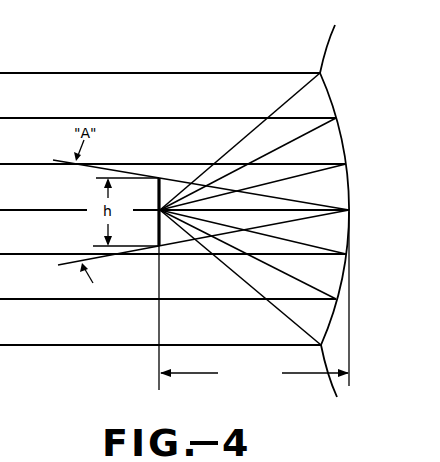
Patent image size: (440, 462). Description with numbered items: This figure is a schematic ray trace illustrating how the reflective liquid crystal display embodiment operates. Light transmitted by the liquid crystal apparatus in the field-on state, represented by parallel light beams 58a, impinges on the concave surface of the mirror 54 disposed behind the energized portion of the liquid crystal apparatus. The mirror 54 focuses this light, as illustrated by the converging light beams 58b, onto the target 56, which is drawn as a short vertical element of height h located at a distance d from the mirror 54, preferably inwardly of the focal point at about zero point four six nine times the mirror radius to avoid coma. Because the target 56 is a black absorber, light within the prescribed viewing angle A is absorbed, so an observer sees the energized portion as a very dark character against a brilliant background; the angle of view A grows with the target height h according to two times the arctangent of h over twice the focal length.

The mirror 54 is at (332, 97).
The target 56 is at (162, 190).
The light beams 58a is at (130, 72).
The light beams 58b is at (280, 105).